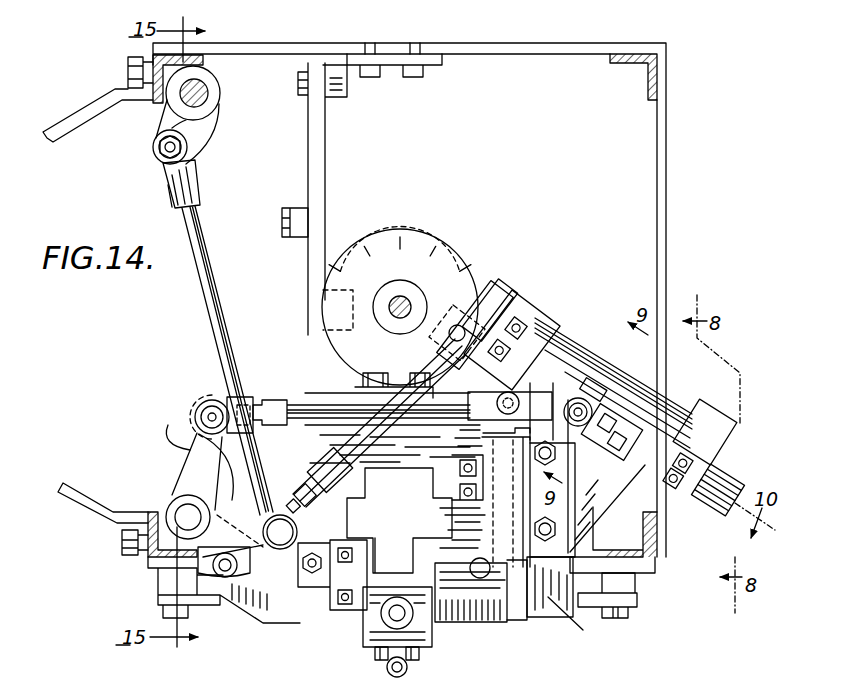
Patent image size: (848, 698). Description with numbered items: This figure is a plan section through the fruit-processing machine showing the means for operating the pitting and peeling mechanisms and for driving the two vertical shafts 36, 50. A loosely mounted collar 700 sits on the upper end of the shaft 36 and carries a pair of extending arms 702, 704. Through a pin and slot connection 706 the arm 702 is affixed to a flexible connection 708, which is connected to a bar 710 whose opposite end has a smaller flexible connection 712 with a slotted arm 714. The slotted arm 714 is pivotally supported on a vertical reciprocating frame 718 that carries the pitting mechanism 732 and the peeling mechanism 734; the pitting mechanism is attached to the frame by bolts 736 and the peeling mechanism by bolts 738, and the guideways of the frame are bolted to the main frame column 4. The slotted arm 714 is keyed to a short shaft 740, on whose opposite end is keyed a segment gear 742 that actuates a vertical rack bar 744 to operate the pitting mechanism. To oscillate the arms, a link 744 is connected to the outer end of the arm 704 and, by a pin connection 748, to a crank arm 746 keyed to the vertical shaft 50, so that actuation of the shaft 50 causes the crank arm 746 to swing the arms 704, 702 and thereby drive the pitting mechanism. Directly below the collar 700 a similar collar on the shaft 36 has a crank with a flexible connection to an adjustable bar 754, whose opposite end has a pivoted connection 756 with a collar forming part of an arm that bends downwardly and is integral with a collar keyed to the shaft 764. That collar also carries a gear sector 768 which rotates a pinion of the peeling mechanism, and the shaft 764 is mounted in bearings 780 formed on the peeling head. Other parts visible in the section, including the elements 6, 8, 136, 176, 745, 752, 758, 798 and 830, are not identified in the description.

The main frame column 4 is at (628, 582).
The frame bracket 6 is at (203, 63).
The frame / section line 8 is at (648, 94).
The vertical shaft 36 is at (185, 516).
The vertical shaft 50 is at (208, 97).
The indexing disc 136 is at (407, 303).
The carriage block 176 is at (508, 305).
The loosely mounted collar 700 is at (162, 520).
The arm 702 is at (190, 445).
The arm 704 is at (230, 480).
The pin and slot connection 706 is at (210, 410).
The flexible connection 708 is at (250, 402).
The bar 710 is at (292, 401).
The smaller flexible connection 712 is at (452, 408).
The slotted arm 714 is at (475, 478).
The vertical reciprocating frame 718 is at (552, 602).
The pitting mechanism 732 is at (340, 628).
The peeling mechanism 734 is at (594, 348).
The bolts 736 is at (332, 596).
The bolts 738 is at (552, 515).
The short shaft 740 is at (503, 590).
The segment gear 742 is at (456, 578).
The vertical rack bar 744 is at (385, 557).
The drive arm 745 is at (222, 333).
The crank arm 746 is at (175, 120).
The pin connection 748 is at (160, 158).
The mounting bracket 752 is at (207, 547).
The adjustable bar 754 is at (368, 390).
The pivoted connection 756 is at (449, 336).
The slide block 758 is at (482, 300).
The shaft 764 is at (637, 388).
The gear sector 768 is at (730, 472).
The bearings 780 is at (540, 300).
The bolt block 798 is at (604, 410).
The pivot pin 830 is at (578, 398).